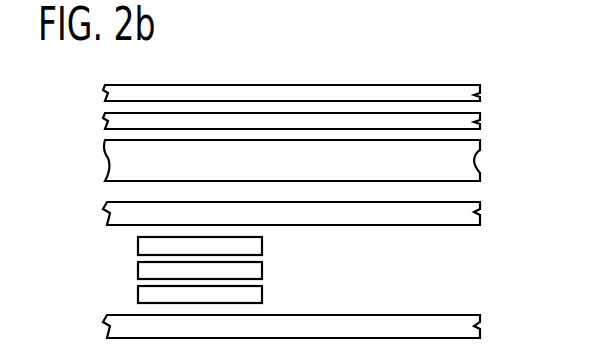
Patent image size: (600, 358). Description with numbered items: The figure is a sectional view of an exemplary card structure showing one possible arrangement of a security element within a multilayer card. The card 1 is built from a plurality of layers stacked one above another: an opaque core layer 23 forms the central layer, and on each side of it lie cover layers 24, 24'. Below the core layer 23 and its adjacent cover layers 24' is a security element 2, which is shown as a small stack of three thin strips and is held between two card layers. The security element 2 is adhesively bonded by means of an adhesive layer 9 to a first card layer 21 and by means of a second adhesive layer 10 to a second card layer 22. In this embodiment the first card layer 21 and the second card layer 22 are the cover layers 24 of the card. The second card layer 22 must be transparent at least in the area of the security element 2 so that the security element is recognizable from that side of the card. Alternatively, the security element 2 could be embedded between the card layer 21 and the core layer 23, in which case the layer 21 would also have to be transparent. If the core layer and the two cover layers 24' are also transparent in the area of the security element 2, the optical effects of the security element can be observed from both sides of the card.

The card 1 is at (411, 79).
The security element 2 is at (205, 266).
The adhesive layer 9 is at (255, 250).
The second adhesive layer 10 is at (255, 294).
The first card layer 21 is at (109, 213).
The second card layer 22 is at (109, 327).
The opaque core layer 23 is at (475, 160).
The cover layers 24 is at (504, 261).
The cover layers 24' is at (317, 107).